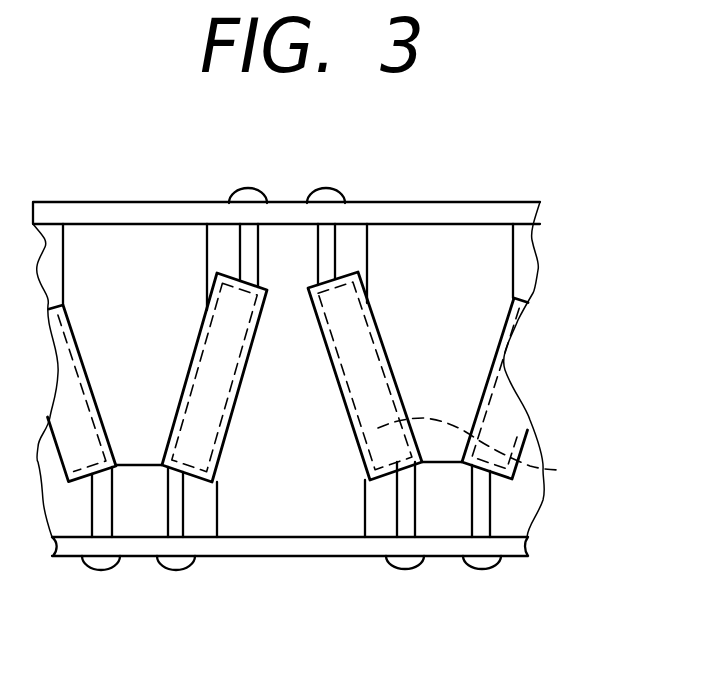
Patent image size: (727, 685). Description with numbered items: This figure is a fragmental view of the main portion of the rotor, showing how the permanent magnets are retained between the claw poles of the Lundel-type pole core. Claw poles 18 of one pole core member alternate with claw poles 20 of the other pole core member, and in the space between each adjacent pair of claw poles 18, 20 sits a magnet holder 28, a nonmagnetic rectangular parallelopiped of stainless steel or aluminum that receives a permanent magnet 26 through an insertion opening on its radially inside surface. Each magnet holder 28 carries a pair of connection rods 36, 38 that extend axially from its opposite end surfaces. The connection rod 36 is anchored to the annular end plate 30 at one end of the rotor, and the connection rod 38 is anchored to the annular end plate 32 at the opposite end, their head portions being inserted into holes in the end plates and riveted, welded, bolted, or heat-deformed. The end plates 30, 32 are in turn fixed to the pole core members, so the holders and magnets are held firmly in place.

The claw pole 18 is at (467, 398).
The claw pole 20 is at (302, 500).
The permanent magnet 26 is at (562, 470).
The magnet holder 28 is at (378, 323).
The annular end plate 30 is at (493, 212).
The annular end plate 32 is at (518, 557).
The connection rod 36 is at (328, 238).
The connection rod 38 is at (407, 510).